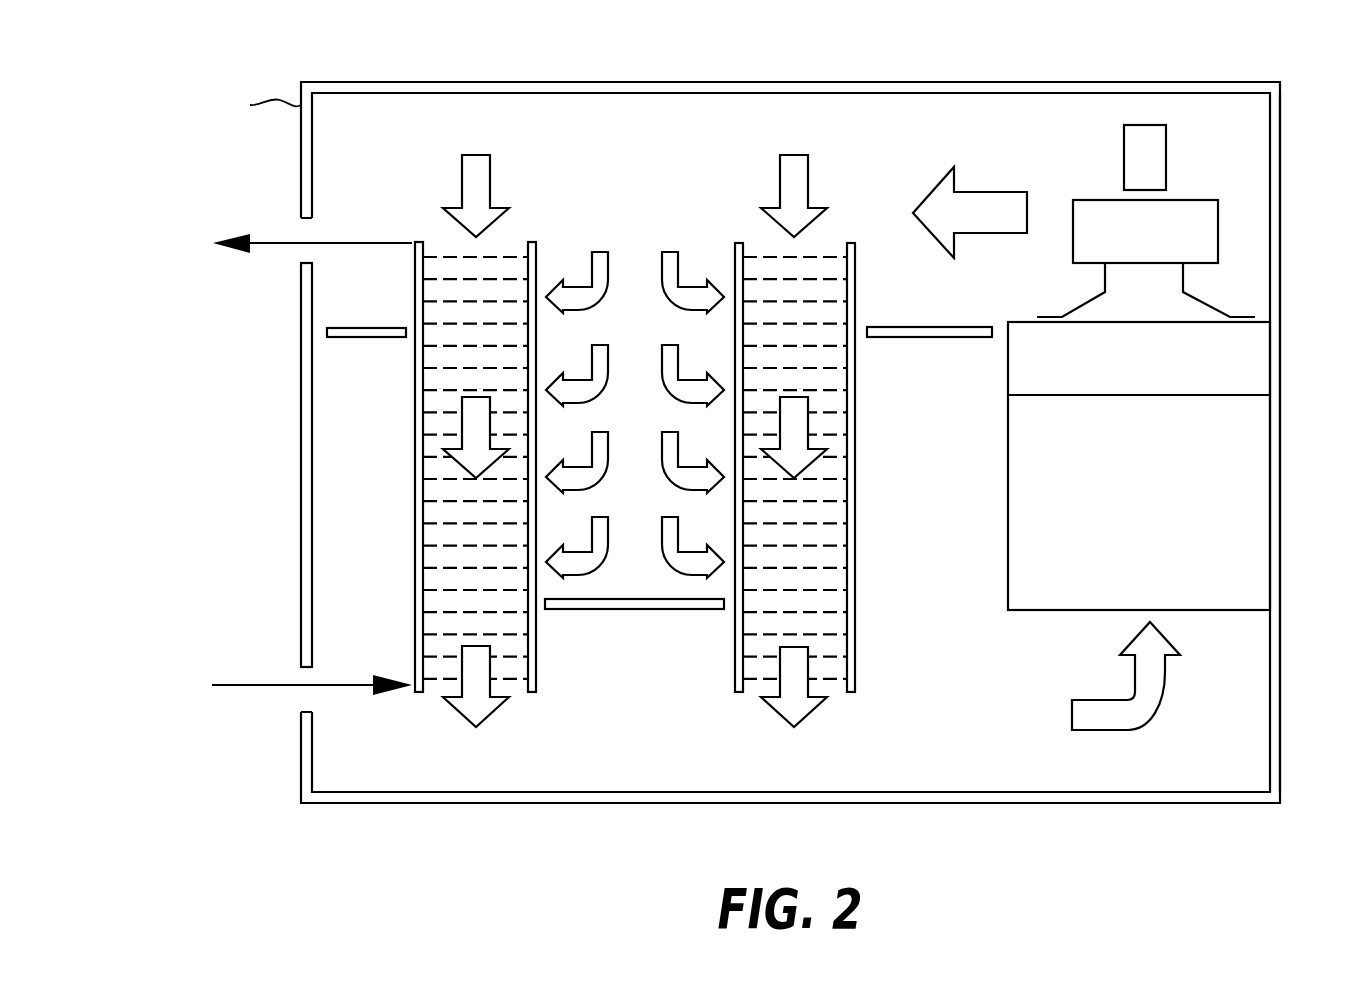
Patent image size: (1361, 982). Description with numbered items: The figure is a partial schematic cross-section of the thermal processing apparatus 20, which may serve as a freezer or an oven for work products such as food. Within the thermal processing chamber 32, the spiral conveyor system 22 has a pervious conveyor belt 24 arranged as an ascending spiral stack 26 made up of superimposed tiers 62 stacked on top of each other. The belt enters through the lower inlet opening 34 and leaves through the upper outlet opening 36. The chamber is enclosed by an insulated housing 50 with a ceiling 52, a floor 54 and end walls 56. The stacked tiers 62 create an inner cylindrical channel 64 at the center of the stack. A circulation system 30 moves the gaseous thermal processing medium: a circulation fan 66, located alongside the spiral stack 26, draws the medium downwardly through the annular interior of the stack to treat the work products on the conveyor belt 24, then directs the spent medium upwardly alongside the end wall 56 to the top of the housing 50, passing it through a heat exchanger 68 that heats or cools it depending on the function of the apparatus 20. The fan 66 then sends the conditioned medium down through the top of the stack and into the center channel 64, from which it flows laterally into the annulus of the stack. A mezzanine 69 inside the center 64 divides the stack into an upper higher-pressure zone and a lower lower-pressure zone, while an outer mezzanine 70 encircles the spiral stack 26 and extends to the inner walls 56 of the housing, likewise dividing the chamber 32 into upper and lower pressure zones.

The thermal processing apparatus 20 is at (1281, 42).
The spiral conveyor system 22 is at (393, 441).
The conveyor belt 24 is at (753, 680).
The spiral stack 26 is at (868, 635).
The circulation system 30 is at (1212, 632).
The thermal processing chamber 32 is at (1159, 61).
The lower inlet opening 34 is at (256, 696).
The upper outlet opening 36 is at (256, 246).
The insulated housing 50 is at (993, 70).
The ceiling 52 is at (658, 84).
The floor 54 is at (453, 803).
The end wall 56 is at (1277, 331).
The tiers 62 is at (435, 600).
The inner cylindrical channel 64 is at (636, 257).
The circulation fan 66 is at (1218, 232).
The heat exchanger 68 is at (1237, 503).
The mezzanine 69 is at (623, 609).
The outer mezzanine 70 is at (350, 327).